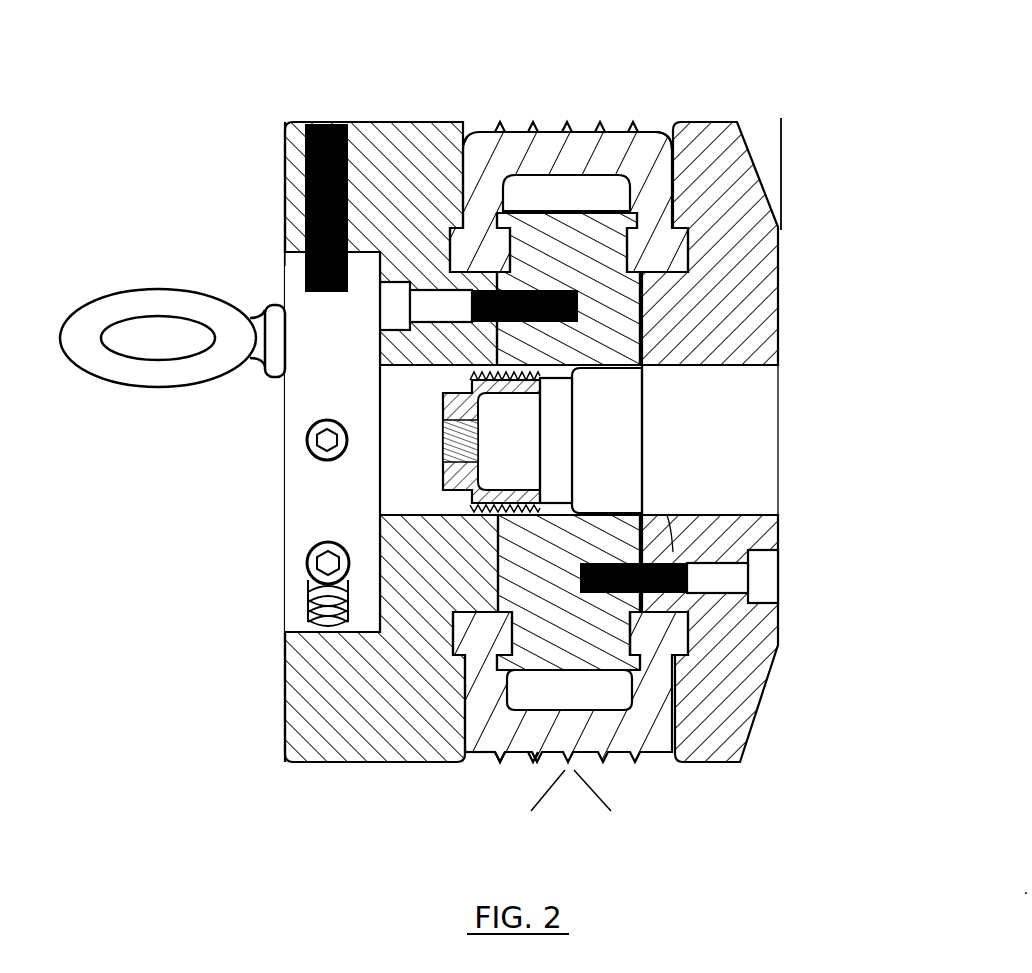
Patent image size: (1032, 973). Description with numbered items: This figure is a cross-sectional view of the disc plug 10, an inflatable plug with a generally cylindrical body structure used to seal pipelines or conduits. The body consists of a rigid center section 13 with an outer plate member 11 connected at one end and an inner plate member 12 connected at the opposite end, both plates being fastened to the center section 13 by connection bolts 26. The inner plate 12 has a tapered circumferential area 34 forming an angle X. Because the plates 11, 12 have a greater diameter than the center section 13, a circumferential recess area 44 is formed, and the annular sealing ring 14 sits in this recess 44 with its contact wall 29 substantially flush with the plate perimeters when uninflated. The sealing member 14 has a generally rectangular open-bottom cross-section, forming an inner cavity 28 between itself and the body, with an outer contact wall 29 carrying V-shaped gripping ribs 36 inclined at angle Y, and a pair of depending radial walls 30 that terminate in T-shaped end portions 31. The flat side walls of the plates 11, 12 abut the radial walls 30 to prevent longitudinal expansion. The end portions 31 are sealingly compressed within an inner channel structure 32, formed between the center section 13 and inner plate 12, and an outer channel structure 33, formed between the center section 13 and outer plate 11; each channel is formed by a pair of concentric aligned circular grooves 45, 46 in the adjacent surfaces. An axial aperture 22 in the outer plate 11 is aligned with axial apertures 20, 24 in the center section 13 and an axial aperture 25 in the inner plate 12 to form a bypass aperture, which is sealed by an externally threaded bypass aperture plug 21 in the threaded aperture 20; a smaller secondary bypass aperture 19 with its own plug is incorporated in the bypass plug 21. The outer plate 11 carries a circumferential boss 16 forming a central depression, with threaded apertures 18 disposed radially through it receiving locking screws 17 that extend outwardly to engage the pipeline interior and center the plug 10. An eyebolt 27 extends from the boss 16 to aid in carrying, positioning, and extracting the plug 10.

The disc plug 10 is at (374, 784).
The outer plate member 11 is at (381, 104).
The inner plate member 12 is at (727, 104).
The center section 13 is at (598, 210).
The sealing ring 14 is at (529, 100).
The boss 16 is at (288, 262).
The locking screws 17 is at (318, 122).
The threaded apertures 18 is at (292, 182).
The secondary bypass aperture 19 is at (457, 442).
The axial aperture 20 is at (552, 440).
The bypass aperture plug 21 is at (467, 410).
The axial aperture 22 is at (413, 477).
The axial aperture 24 is at (617, 457).
The axial aperture 25 is at (757, 420).
The connection bolts 26 is at (397, 303).
The eyebolt 27 is at (123, 308).
The inner cavity 28 is at (560, 705).
The outer contact wall 29 is at (523, 757).
The radial walls 30 is at (717, 763).
The end portions 31 is at (740, 657).
The inner channel structure 32 is at (712, 616).
The outer channel structure 33 is at (445, 643).
The tapered circumferential area 34 is at (808, 128).
The gripping ribs 36 is at (640, 765).
The circumferential recess area 44 is at (650, 112).
The circular groove 45 is at (612, 645).
The circular groove 46 is at (667, 515).